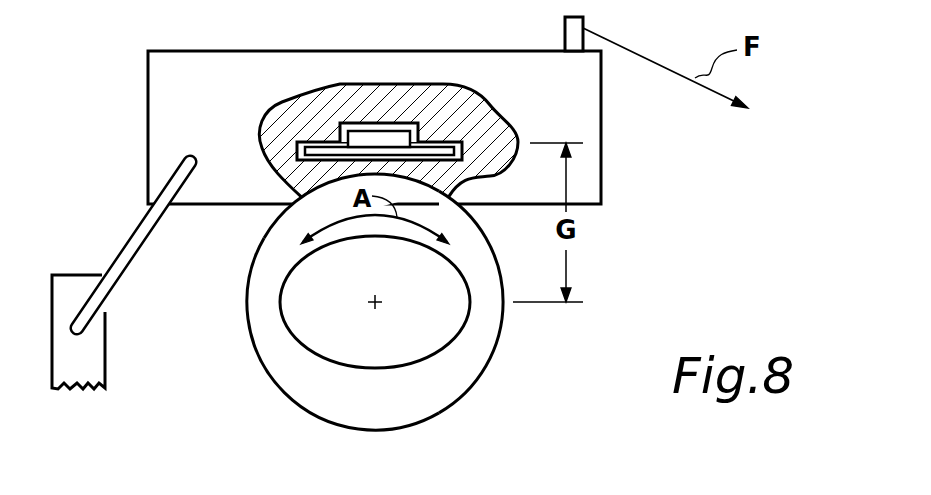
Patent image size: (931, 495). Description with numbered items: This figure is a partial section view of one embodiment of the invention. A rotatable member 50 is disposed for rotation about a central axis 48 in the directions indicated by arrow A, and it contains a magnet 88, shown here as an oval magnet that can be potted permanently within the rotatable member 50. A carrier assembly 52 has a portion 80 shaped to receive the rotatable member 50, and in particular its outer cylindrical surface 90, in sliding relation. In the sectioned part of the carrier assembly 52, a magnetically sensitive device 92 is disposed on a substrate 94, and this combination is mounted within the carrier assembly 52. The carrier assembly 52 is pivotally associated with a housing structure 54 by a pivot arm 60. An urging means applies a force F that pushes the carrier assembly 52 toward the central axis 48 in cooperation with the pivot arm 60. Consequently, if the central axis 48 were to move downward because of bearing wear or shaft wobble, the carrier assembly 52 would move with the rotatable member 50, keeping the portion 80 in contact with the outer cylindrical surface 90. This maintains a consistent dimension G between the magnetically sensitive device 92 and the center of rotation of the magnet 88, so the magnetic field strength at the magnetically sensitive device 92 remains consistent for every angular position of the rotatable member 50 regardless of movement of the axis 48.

The central axis 48 is at (378, 303).
The rotatable member 50 is at (332, 407).
The carrier assembly 52 is at (592, 118).
The housing structure 54 is at (86, 362).
The pivot arm 60 is at (137, 230).
The portion of the carrier assembly 80 is at (303, 193).
The magnet 88 is at (310, 332).
The outer cylindrical surface 90 is at (486, 367).
The magnetically sensitive device 92 is at (360, 137).
The substrate 94 is at (443, 150).